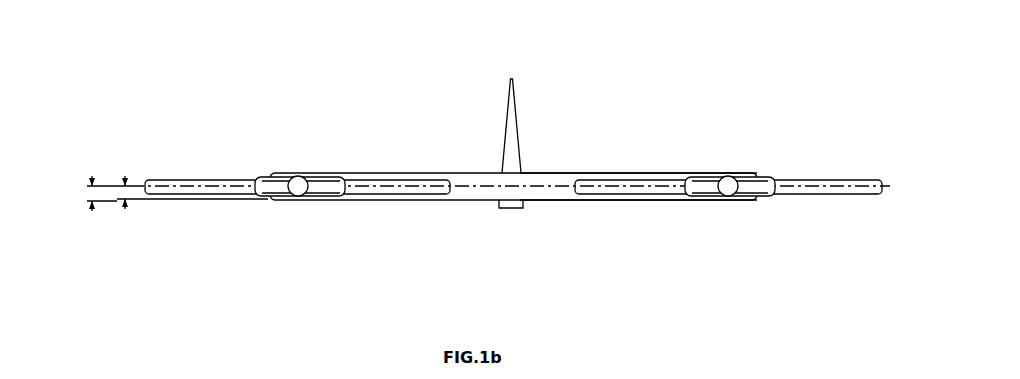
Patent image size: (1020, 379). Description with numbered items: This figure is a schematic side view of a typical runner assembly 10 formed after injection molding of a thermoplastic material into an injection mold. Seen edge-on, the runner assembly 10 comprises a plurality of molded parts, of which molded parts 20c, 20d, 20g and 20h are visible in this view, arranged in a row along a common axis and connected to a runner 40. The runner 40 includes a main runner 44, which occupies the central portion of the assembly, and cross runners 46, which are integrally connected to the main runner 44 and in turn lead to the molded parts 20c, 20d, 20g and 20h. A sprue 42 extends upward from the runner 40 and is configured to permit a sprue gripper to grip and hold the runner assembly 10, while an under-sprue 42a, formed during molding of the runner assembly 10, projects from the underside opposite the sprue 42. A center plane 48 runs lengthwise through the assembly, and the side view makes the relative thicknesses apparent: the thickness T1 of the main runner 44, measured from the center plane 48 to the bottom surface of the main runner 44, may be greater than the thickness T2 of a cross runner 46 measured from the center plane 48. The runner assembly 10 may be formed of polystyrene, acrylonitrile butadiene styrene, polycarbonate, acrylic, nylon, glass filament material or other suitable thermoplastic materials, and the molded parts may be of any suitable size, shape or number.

The runner assembly 10 is at (617, 107).
The molded part 20c is at (208, 191).
The molded part 20d is at (373, 188).
The molded part 20g is at (637, 188).
The molded part 20h is at (833, 182).
The runner 40 is at (460, 195).
The sprue 42 is at (513, 117).
The under-sprue 42a is at (513, 205).
The main runner 44 is at (558, 193).
The cross runner 46 is at (265, 183).
The center plane 48 is at (487, 182).
The thickness of main runner T1 is at (97, 232).
The thickness of cross runner T2 is at (125, 160).